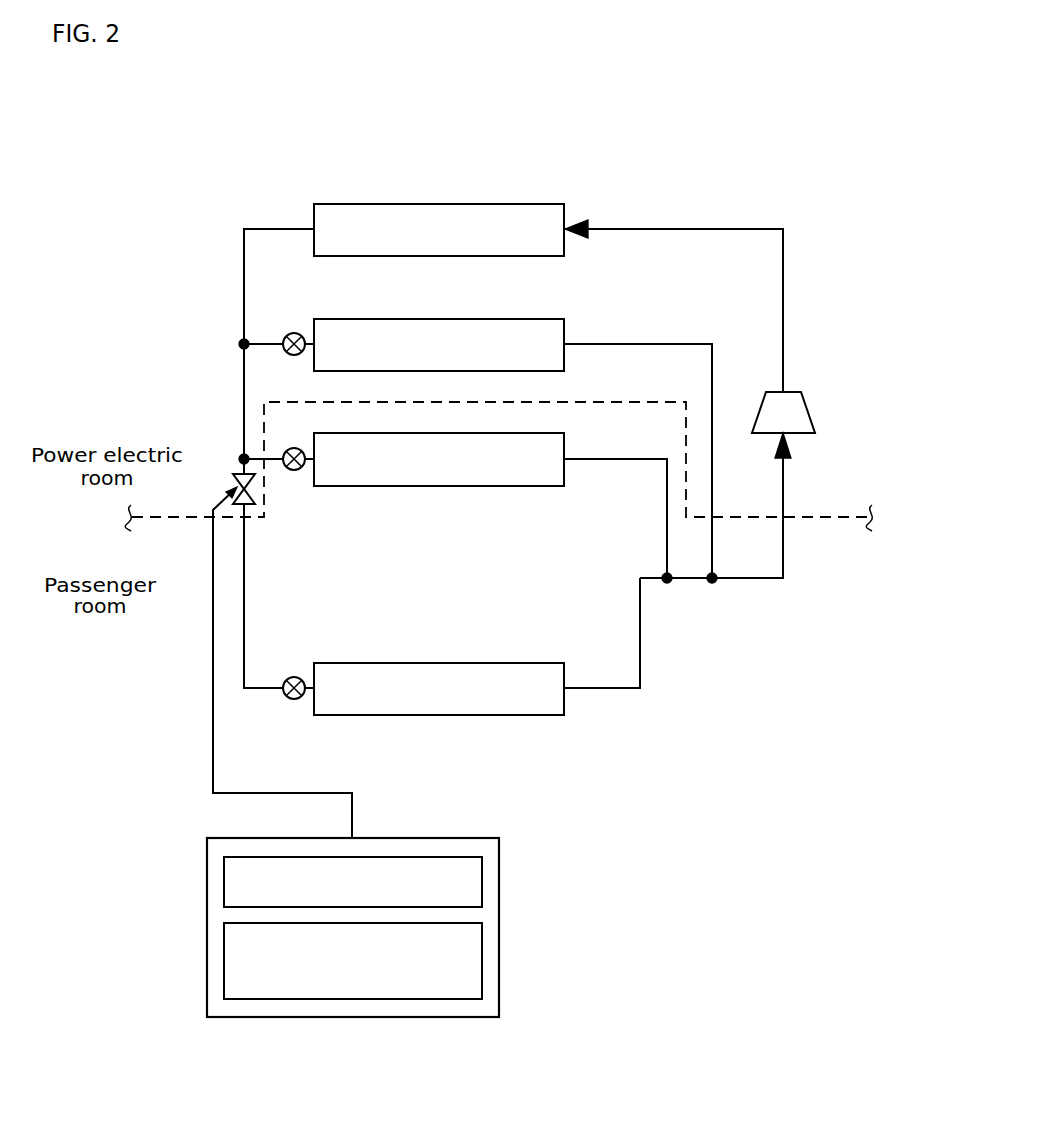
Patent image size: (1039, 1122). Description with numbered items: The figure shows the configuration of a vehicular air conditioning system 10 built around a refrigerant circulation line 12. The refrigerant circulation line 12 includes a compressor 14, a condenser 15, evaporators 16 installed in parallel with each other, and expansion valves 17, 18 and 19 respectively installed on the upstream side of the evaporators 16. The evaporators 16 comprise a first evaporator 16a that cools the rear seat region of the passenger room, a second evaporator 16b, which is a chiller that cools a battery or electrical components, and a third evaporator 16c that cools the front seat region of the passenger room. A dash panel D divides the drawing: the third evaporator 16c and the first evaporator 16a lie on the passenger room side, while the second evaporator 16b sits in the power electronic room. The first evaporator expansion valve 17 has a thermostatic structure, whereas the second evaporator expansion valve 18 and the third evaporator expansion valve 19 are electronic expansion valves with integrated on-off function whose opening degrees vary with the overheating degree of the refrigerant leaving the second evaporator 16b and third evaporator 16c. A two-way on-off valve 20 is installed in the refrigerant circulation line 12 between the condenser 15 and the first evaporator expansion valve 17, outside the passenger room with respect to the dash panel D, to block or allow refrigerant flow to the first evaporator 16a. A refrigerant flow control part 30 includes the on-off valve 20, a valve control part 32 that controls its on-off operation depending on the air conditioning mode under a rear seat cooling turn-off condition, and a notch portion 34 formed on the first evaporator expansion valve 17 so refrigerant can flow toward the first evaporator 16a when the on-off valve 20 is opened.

The air conditioning system 10 is at (668, 214).
The refrigerant circulation line 12 is at (765, 228).
The compressor 14 is at (808, 412).
The condenser 15 is at (538, 204).
The evaporators 16 is at (454, 484).
The first evaporator 16a is at (540, 663).
The second evaporator (chiller) 16b is at (325, 319).
The third evaporator 16c is at (545, 486).
The first evaporator expansion valve 17 is at (291, 700).
The second evaporator expansion valve 18 is at (291, 334).
The third evaporator expansion valve 19 is at (291, 449).
The on-off valve 20 is at (240, 505).
The refrigerant flow control part 30 is at (267, 888).
The valve control part 32 is at (224, 882).
The notch portion 34 is at (293, 961).
The dash panel D is at (157, 518).